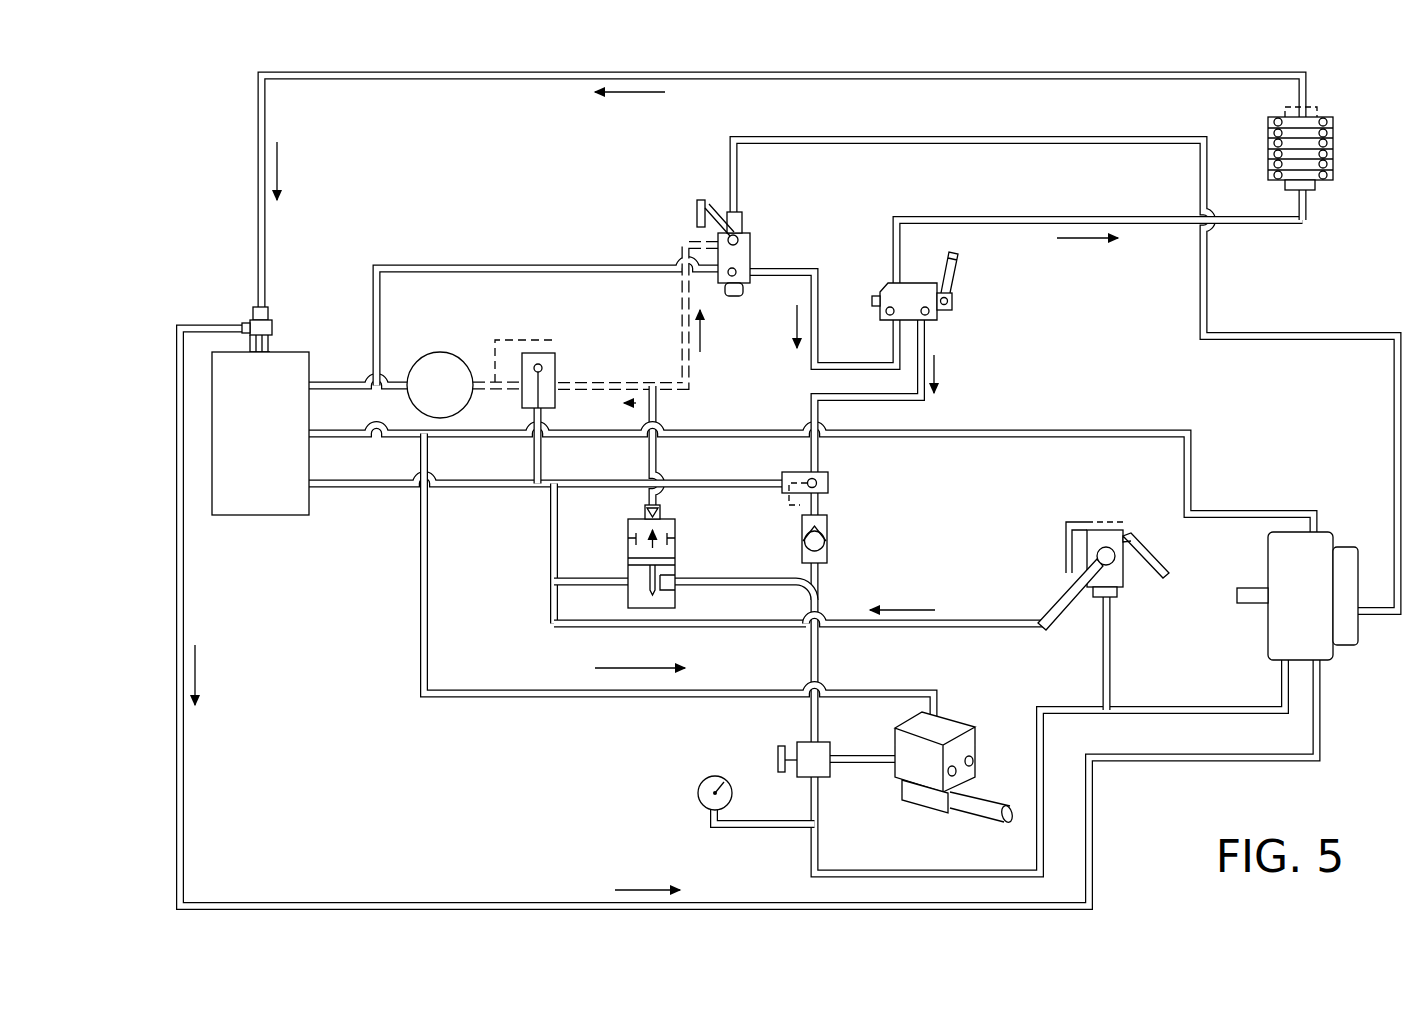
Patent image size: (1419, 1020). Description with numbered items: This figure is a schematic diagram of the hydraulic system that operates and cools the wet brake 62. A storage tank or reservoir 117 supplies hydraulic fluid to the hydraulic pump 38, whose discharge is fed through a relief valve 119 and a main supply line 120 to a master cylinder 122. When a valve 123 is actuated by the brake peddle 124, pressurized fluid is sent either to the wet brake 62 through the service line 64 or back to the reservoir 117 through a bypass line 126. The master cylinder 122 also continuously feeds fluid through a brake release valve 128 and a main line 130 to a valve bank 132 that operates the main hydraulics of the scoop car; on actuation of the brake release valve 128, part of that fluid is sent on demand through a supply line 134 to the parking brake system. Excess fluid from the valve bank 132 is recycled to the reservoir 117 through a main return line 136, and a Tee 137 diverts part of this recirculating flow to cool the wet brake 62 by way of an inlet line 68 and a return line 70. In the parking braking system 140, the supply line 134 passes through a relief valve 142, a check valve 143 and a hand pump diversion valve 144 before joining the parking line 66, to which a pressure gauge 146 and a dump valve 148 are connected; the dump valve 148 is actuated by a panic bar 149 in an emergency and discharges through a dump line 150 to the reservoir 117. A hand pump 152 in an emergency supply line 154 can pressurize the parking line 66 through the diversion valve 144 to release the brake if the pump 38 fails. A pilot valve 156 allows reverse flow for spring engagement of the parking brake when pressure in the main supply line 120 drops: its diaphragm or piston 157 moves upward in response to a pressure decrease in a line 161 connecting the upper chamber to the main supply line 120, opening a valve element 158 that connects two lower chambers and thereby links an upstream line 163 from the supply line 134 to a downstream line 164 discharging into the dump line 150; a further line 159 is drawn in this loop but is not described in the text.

The hydraulic pump 38 is at (432, 355).
The wet brake 62 is at (1311, 572).
The service line 64 is at (1322, 335).
The parking line 66 is at (1180, 708).
The inlet line 68 is at (1322, 714).
The return line 70 is at (1228, 512).
The storage tank or reservoir 117 is at (260, 433).
The relief valve 119 is at (560, 360).
The main supply line 120 is at (690, 382).
The master cylinder 122 is at (752, 262).
The valve 123 is at (745, 238).
The brake peddle 124 is at (688, 212).
The bypass line 126 is at (490, 268).
The brake release valve 128 is at (950, 318).
The main line 130 is at (1000, 218).
The valve bank 132 is at (1323, 180).
The supply line 134 is at (932, 338).
The main return line 136 is at (395, 78).
The Tee 137 is at (275, 330).
The parking braking system 140 is at (645, 762).
The relief valve 142 is at (830, 482).
The check valve 143 is at (830, 556).
The hand pump diversion valve 144 is at (790, 745).
The pressure gauge 146 is at (700, 804).
The dump valve 148 is at (1128, 590).
The panic bar 149 is at (1165, 562).
The dump line 150 is at (972, 625).
The hand pump 152 is at (958, 720).
The emergency supply line 154 is at (850, 692).
The pilot valve 156 is at (680, 520).
The diaphragm or piston 157 is at (680, 556).
The valve element 158 is at (660, 590).
The line 159 is at (658, 616).
The line 161 is at (660, 452).
The upstream line 163 is at (822, 602).
The downstream line 164 is at (596, 578).